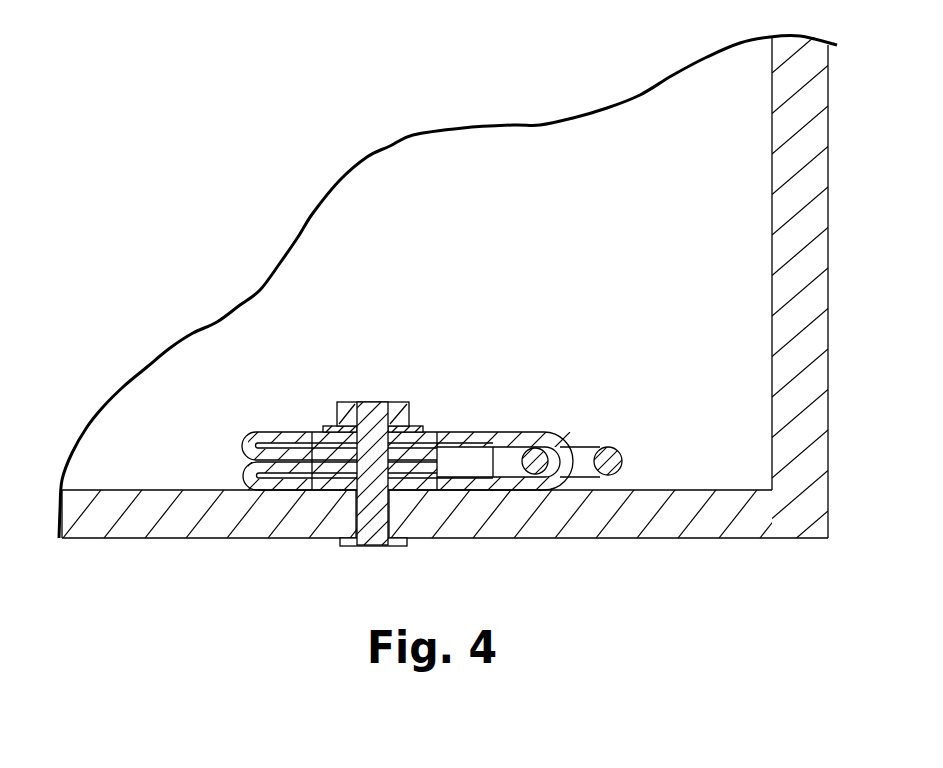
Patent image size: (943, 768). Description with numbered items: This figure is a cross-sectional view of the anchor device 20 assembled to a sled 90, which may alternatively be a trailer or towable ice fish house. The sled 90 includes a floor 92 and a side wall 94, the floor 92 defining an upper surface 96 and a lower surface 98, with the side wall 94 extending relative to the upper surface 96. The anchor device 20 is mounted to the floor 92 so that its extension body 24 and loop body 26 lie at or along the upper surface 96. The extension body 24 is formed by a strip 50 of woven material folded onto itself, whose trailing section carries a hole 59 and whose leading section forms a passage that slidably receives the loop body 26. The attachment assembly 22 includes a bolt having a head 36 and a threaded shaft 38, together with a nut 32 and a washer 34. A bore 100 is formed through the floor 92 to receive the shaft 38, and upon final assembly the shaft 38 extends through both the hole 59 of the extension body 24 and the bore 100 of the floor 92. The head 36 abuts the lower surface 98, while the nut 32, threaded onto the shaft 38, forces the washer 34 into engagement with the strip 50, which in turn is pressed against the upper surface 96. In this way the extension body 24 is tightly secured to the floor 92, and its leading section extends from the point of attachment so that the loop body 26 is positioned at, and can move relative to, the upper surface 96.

The anchor device 20 is at (398, 452).
The attachment assembly 22 is at (337, 426).
The extension body 24 is at (463, 428).
The loop body 26 is at (569, 426).
The nut 32 is at (411, 430).
The washer 34 is at (318, 430).
The head 36 is at (352, 546).
The threaded shaft 38 is at (370, 402).
The strip 50 is at (240, 453).
The hole 59 is at (425, 435).
The sled 90 is at (545, 197).
The floor 92 is at (180, 512).
The side wall 94 is at (795, 288).
The upper surface 96 is at (668, 488).
The lower surface 98 is at (665, 538).
The bore 100 is at (390, 512).